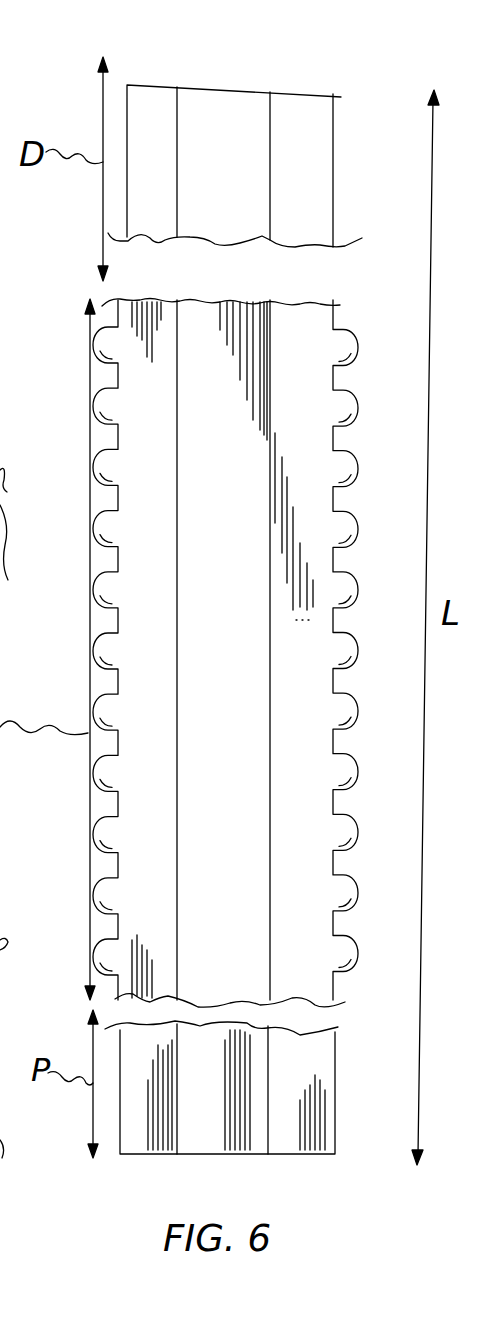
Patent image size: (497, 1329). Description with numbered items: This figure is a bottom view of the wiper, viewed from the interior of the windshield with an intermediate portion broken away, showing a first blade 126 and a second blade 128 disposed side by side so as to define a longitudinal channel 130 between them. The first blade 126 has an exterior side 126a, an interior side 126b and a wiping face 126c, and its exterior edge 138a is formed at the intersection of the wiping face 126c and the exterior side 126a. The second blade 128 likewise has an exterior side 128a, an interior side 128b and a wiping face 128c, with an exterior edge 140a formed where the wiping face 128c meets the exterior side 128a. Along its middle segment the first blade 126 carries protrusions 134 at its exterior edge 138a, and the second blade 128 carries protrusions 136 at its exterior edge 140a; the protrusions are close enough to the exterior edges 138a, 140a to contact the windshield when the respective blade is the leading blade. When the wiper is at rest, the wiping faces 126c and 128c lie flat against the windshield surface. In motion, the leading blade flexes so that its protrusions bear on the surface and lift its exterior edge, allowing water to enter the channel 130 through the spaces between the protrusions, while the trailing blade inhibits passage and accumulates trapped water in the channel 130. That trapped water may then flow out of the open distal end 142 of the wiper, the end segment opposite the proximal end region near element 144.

The open distal end 142 is at (212, 87).
The lower tube section 144 is at (225, 1156).
The first blade 126 is at (184, 653).
The exterior side 126a is at (112, 376).
The interior side 126b is at (248, 982).
The wiping face 126c is at (240, 847).
The second blade 128 is at (304, 650).
The exterior side 128a is at (342, 620).
The interior side 128b is at (262, 918).
The wiping face 128c is at (307, 523).
The longitudinal channel 130 is at (243, 625).
The protrusions 134 is at (95, 602).
The protrusions 136 is at (345, 775).
The exterior edge 138a is at (118, 375).
The exterior edge 140a is at (412, 447).